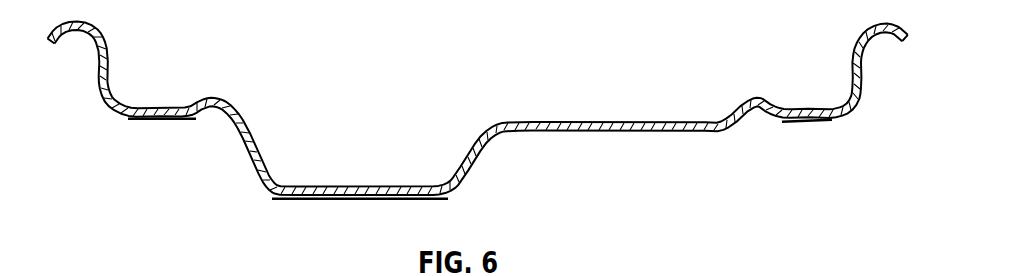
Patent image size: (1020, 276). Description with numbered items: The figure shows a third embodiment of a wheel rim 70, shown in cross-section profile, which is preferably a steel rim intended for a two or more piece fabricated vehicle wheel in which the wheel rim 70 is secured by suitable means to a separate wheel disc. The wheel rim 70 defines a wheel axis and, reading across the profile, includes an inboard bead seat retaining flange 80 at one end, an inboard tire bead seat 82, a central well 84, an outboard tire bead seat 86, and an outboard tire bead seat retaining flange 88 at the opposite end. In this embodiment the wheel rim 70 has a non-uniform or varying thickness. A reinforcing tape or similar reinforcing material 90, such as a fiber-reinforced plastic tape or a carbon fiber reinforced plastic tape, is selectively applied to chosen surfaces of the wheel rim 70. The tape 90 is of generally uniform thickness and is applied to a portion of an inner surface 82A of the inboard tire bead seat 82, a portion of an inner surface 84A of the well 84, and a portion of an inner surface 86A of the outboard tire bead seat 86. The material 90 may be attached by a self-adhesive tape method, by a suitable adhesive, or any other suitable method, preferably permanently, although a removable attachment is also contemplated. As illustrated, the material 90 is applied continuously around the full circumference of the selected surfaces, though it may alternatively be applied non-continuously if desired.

The wheel rim 70 is at (521, 113).
The inboard bead seat retaining flange 80 is at (864, 80).
The inboard tire bead seat 82 is at (790, 108).
The inner surface of the inboard tire bead seat 82A is at (785, 123).
The well 84 is at (466, 166).
The inner surface of the well 84A is at (338, 199).
The outboard tire bead seat 86 is at (250, 157).
The inner surface of the outboard tire bead seat 86A is at (163, 120).
The outboard tire bead seat retaining flange 88 is at (95, 68).
The reinforcing material 90 is at (145, 107).